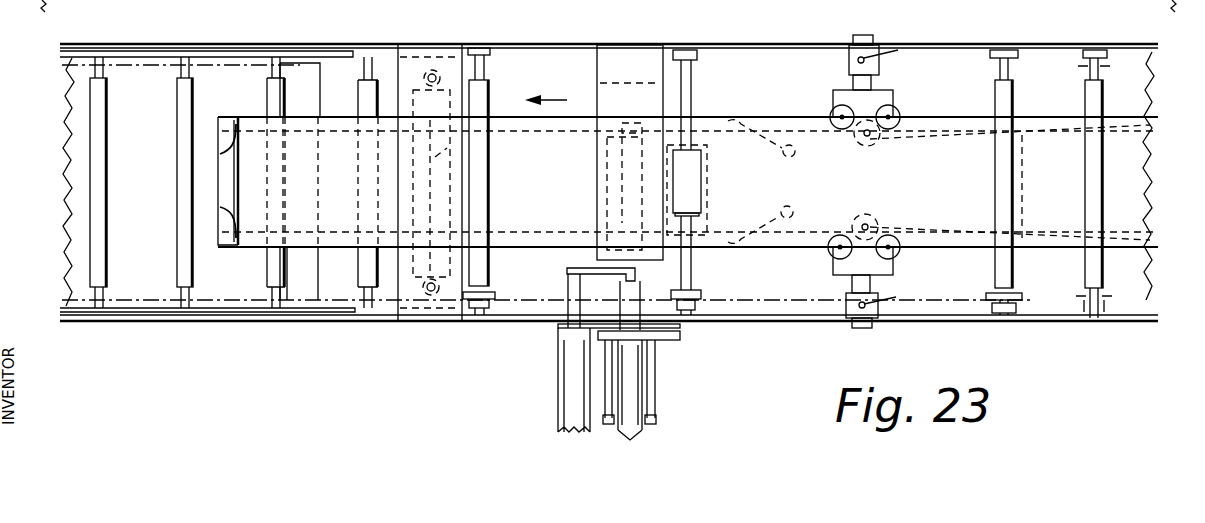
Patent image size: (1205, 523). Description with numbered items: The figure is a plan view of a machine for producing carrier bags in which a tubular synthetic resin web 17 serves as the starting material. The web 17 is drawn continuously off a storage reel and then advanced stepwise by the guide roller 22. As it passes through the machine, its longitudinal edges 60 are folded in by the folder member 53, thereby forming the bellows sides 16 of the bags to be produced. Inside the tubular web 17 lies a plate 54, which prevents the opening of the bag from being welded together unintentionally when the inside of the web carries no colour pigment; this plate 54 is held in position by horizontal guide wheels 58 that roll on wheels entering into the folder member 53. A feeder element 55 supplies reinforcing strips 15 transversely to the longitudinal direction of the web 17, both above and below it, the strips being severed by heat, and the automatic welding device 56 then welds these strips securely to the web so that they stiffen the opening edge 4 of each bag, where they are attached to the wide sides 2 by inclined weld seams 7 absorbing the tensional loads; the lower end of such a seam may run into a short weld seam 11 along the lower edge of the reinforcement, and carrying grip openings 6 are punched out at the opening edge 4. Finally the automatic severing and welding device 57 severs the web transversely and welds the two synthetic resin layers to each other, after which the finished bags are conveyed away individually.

The wide sides 2 is at (325, 222).
The opening edge 4 is at (217, 235).
The carrying grip openings 6 is at (218, 190).
The weld seams 7 is at (223, 155).
The short weld seam 11 is at (232, 128).
The reinforcing strip 15 is at (630, 197).
The bellows sides 16 is at (306, 123).
The tubular synthetic resin web 17 is at (1140, 142).
The guide roller 22 is at (1090, 270).
The folder member 53 is at (832, 98).
The plate 54 is at (967, 222).
The feeder element 55 is at (568, 271).
The automatic welding device 56 is at (595, 104).
The automatic severing and welding device 57 is at (419, 282).
The horizontal guide wheels 58 is at (872, 213).
The longitudinal edges 60 is at (943, 117).